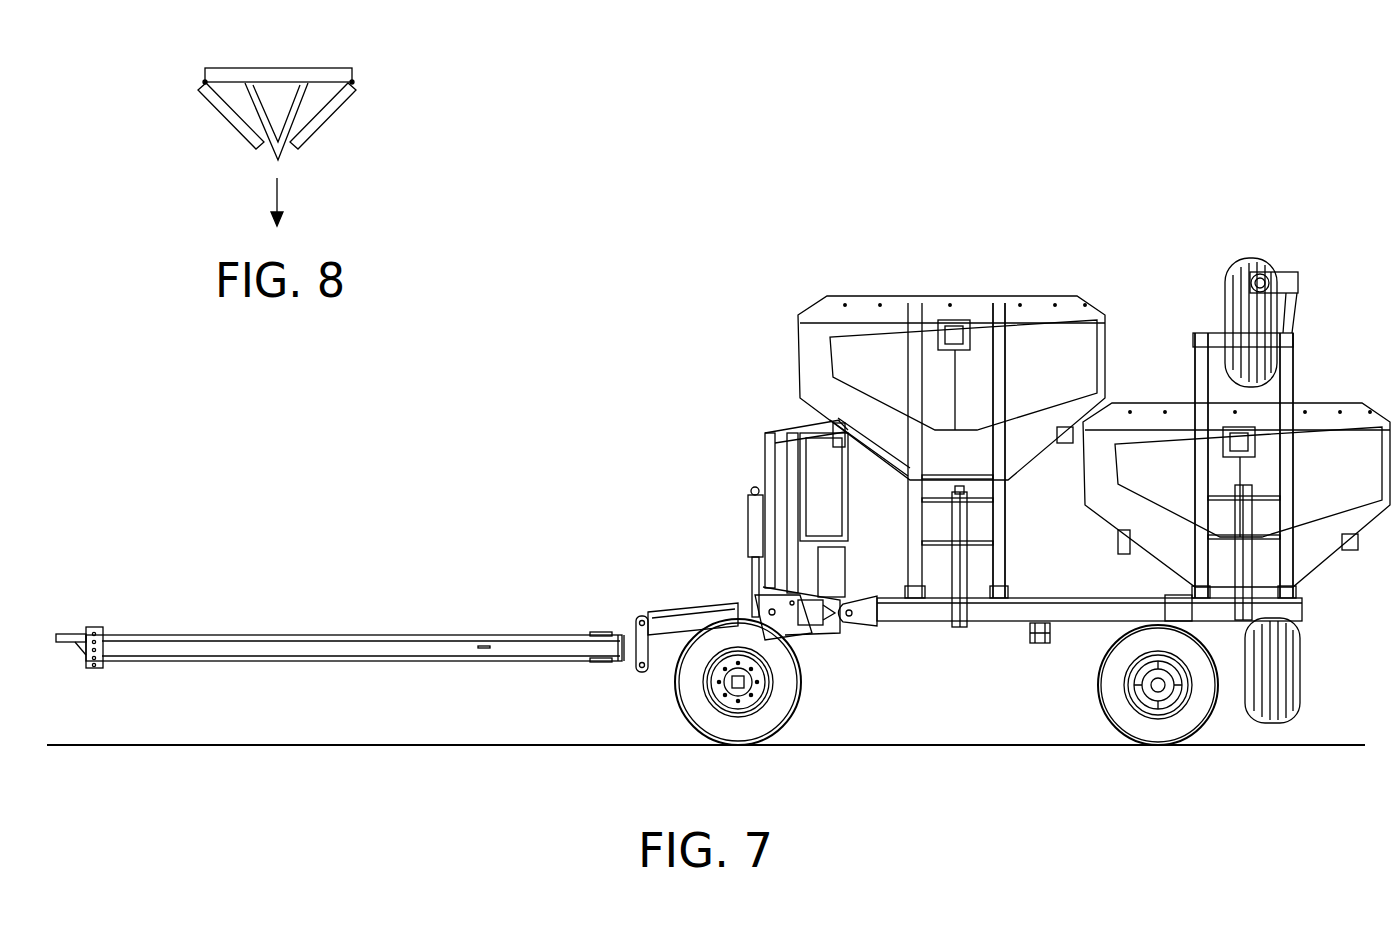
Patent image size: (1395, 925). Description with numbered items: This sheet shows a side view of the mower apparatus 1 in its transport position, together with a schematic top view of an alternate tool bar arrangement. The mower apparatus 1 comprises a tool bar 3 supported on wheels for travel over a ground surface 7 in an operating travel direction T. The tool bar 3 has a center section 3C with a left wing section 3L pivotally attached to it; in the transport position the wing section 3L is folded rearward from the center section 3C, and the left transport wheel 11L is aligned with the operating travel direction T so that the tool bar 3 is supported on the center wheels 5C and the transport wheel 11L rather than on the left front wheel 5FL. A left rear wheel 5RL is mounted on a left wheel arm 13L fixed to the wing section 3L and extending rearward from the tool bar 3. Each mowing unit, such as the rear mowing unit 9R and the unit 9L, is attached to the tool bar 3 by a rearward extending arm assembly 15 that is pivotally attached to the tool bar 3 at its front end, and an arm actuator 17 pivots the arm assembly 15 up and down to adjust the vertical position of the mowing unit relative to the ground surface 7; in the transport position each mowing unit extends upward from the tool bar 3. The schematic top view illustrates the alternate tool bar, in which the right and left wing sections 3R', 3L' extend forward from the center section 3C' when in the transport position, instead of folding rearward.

In FIG. 7, the mower apparatus 1 is at (1040, 192).
In FIG. 8, the tool bar 3 is at (352, 70).
In FIG. 8, the center section 3C' is at (295, 89).
In FIG. 8, the right wing section 3R' is at (206, 117).
In FIG. 8, the left wing section 3L' is at (349, 117).
In FIG. 8, the operating travel direction T is at (288, 203).
In FIG. 7, the ground surface 7 is at (318, 745).
In FIG. 7, the rear mowing unit 9R is at (1040, 296).
In FIG. 7, the left hopper 9L is at (1330, 403).
In FIG. 7, the left rear wheel 5RL is at (1250, 262).
In FIG. 7, the left wheel arm 13L is at (1293, 353).
In FIG. 7, the arm assembly 15 is at (1005, 510).
In FIG. 7, the arm actuator 17 is at (967, 567).
In FIG. 7, the center section 3C is at (845, 643).
In FIG. 7, the left wing section 3L is at (1046, 659).
In FIG. 7, the left front wheel 5FL is at (1302, 651).
In FIG. 7, the center wheels 5C is at (686, 720).
In FIG. 7, the left transport wheel 11L is at (1105, 716).